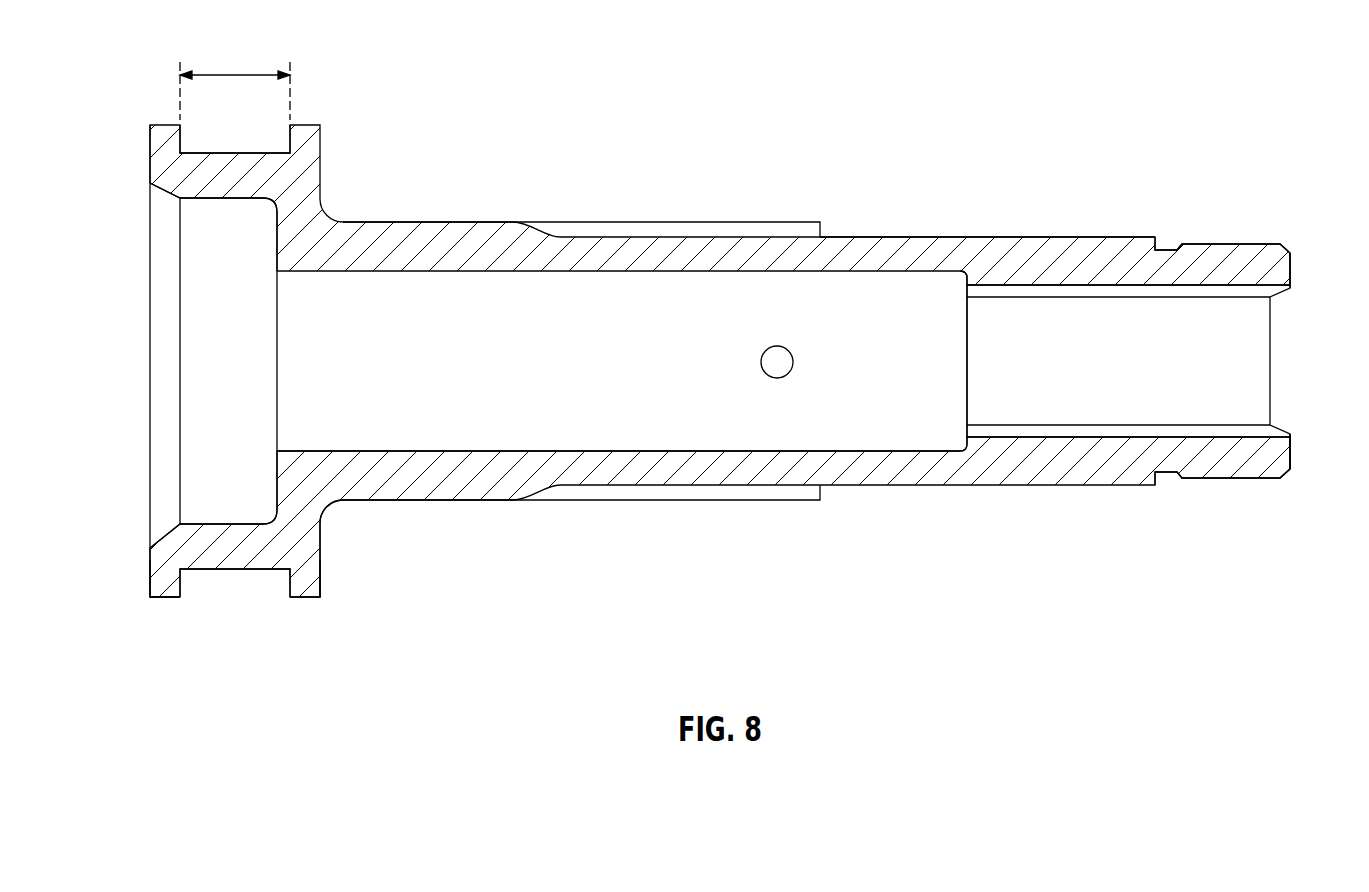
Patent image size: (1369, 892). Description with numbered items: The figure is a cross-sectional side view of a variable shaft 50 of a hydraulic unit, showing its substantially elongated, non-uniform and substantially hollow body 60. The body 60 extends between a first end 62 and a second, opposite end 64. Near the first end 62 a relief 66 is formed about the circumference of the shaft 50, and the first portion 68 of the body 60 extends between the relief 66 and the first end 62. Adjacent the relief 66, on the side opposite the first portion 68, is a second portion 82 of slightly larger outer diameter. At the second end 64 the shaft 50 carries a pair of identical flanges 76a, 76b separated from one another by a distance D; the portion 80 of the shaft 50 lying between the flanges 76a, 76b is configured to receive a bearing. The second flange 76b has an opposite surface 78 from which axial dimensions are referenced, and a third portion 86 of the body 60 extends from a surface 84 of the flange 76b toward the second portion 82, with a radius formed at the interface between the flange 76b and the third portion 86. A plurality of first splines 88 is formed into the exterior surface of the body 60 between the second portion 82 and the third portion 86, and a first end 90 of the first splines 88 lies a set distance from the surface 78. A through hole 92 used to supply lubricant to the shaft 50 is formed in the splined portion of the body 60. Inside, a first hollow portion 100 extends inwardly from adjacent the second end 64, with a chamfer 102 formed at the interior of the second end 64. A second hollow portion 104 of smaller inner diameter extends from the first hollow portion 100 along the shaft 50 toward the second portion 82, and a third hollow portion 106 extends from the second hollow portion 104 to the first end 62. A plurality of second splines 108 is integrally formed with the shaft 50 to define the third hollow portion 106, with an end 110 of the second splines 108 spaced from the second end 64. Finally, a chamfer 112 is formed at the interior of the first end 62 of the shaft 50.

The variable shaft 50 is at (1173, 61).
The body 60 is at (955, 485).
The first end 62 is at (1292, 462).
The second end 64 is at (150, 565).
The relief 66 is at (1165, 481).
The first portion 68 is at (1222, 244).
The first flange 76a is at (162, 602).
The second flange 76b is at (304, 609).
The opposite surface 78 is at (290, 146).
The portion between flanges 80 is at (235, 569).
The second portion 82 is at (880, 238).
The surface of second flange 84 is at (322, 582).
The third portion 86 is at (470, 221).
The first splines 88 is at (655, 236).
The first end of first splines 90 is at (821, 492).
The through hole 92 is at (777, 362).
The first hollow portion 100 is at (220, 424).
The chamfer 102 is at (162, 188).
The second hollow portion 104 is at (455, 434).
The third hollow portion 106 is at (1055, 400).
The second splines 108 is at (1155, 286).
The end of second splines 110 is at (963, 287).
The chamfer 112 is at (1291, 425).
The distance D is at (237, 72).